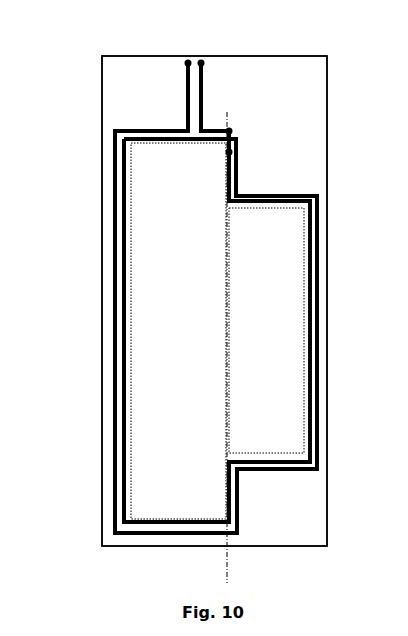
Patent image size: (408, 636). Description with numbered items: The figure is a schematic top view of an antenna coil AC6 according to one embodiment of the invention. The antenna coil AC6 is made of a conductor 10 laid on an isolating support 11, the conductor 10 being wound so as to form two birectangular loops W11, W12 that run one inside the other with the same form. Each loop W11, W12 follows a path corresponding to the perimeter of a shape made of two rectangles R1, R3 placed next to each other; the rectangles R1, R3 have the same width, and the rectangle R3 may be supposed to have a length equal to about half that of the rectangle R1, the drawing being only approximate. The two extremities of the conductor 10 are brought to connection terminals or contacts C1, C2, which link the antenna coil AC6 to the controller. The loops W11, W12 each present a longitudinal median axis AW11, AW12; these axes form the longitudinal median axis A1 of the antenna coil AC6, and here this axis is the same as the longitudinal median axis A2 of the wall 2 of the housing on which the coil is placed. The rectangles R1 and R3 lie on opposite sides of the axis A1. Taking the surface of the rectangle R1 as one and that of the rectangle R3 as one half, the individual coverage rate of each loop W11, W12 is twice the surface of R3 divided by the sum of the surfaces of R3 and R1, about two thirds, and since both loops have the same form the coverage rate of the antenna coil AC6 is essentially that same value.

The wall 2 is at (100, 279).
The isolating support 11 is at (189, 301).
The conductor 10 is at (207, 298).
The longitudinal median axis of loop W11 AW11 is at (220, 298).
The longitudinal median axis of loop W12 AW12 is at (217, 292).
The birectangular loop W11 is at (318, 285).
The birectangular loop W12 is at (311, 346).
The antenna coil AC6 is at (108, 190).
The connection contact C1 is at (188, 59).
The connection contact C2 is at (203, 59).
The longitudinal median axis of the antenna coil A1 is at (229, 112).
The longitudinal median axis of the wall A2 is at (253, 102).
The rectangle R1 is at (131, 241).
The rectangle R3 is at (303, 252).